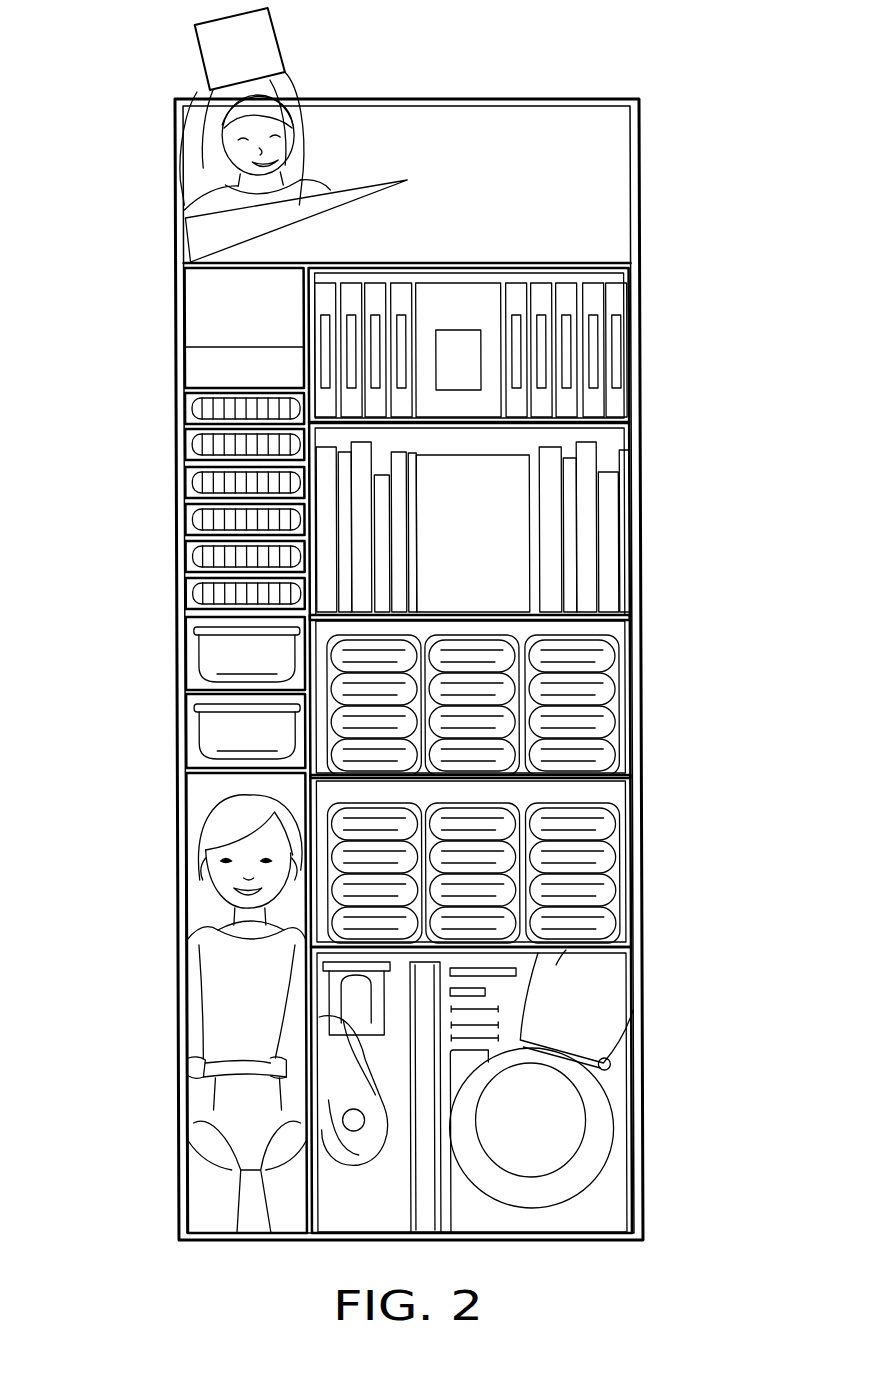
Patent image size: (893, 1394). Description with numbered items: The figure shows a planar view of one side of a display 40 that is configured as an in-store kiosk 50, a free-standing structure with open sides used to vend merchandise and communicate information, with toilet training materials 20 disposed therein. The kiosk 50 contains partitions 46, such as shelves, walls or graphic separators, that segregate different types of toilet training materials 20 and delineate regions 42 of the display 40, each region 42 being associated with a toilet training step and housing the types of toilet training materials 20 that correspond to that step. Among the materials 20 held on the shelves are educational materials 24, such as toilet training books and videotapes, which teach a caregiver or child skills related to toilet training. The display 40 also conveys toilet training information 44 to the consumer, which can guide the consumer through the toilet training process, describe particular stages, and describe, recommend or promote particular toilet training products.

The toilet training materials 20 is at (555, 972).
The educational materials 24 is at (578, 513).
The display 40 is at (672, 277).
The region 42 is at (138, 811).
The toilet training information 44 is at (197, 557).
The partitions 46 is at (310, 558).
The kiosk 50 is at (175, 450).